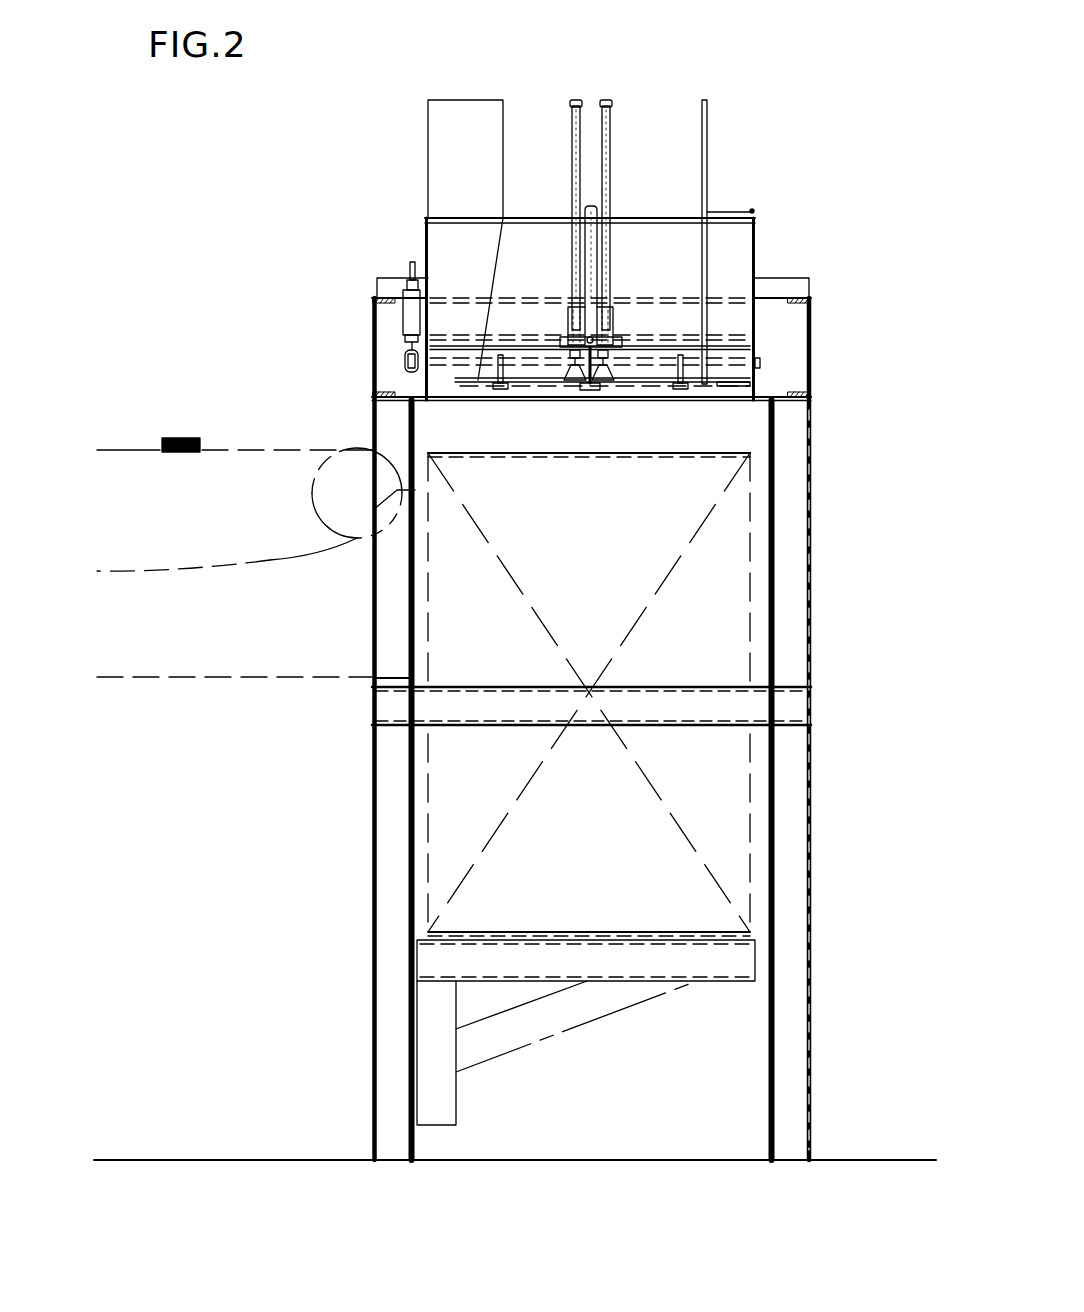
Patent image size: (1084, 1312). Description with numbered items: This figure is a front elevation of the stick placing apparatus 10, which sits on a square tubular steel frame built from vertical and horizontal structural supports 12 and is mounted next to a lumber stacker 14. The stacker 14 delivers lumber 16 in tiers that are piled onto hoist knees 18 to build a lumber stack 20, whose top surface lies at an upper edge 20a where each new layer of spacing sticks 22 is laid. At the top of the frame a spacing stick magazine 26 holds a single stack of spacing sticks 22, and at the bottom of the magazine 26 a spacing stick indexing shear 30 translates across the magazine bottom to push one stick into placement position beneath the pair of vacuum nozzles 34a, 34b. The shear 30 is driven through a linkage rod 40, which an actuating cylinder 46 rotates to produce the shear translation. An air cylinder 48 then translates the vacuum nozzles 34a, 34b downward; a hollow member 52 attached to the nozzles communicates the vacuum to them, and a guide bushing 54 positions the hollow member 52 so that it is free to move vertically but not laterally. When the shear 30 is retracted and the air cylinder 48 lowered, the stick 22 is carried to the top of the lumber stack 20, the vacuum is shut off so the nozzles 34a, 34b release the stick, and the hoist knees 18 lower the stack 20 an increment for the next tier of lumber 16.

The apparatus 10 is at (817, 178).
The structural supports 12 is at (798, 488).
The lumber stacker 14 is at (268, 450).
The lumber 16 is at (183, 437).
The hoist knees 18 is at (583, 1010).
The lumber stack 20 is at (623, 555).
The platform upper edge 20a is at (752, 452).
The spacing sticks 22 is at (740, 385).
The spacing stick magazine 26 is at (465, 188).
The spacing stick indexing shear 30 is at (457, 383).
The vacuum nozzle 34a is at (576, 385).
The vacuum nozzle 34b is at (605, 386).
The linkage rod 40 is at (645, 368).
The actuating cylinder 46 is at (410, 313).
The air cylinder 48 is at (590, 265).
The hollow member 52 is at (578, 99).
The guide bushing 54 is at (600, 320).